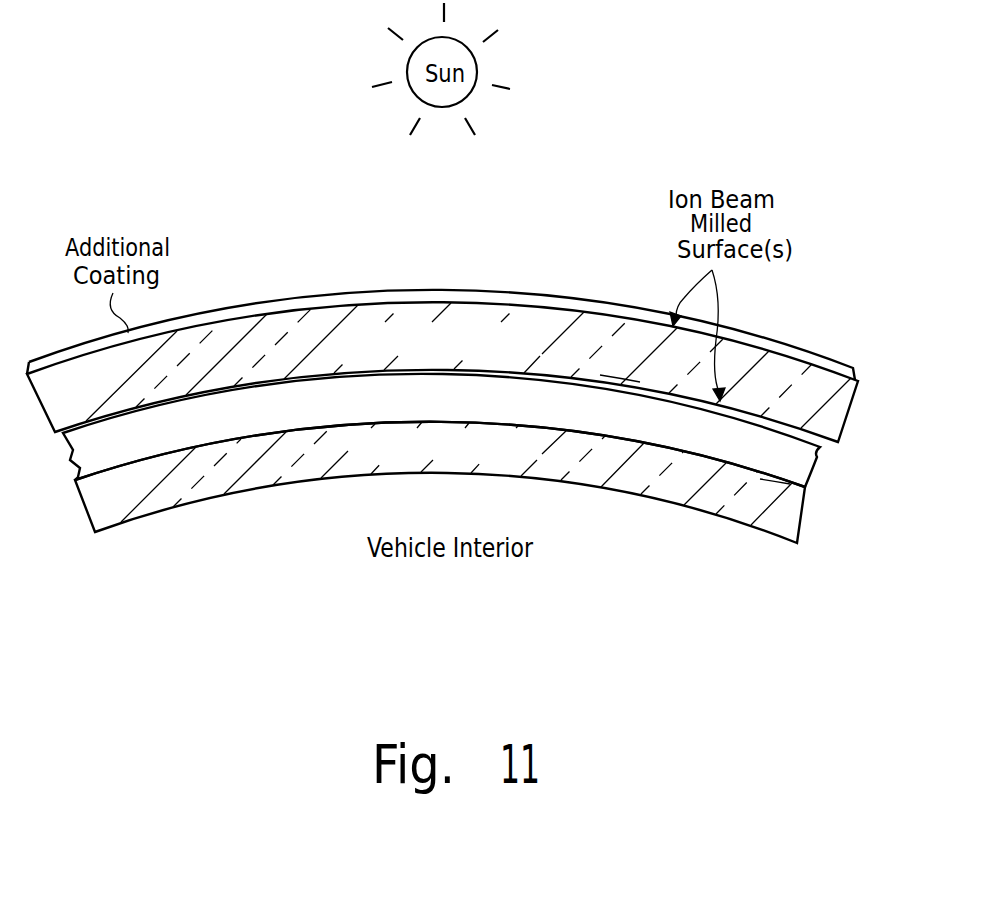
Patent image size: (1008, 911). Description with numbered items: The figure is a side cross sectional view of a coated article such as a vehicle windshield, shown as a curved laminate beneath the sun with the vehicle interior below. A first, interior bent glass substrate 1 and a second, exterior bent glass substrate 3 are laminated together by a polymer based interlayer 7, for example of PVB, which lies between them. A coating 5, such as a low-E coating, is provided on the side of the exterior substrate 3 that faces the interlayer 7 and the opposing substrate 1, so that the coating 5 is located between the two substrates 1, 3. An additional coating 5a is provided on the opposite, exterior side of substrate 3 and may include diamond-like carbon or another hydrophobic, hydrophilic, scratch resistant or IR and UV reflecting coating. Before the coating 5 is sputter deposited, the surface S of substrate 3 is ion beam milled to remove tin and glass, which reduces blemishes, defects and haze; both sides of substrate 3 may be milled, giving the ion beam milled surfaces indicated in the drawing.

The interior glass substrate 1 is at (698, 490).
The exterior glass substrate 3 is at (785, 362).
The coating 5 is at (815, 455).
The additional coating 5a is at (435, 300).
The polymer based interlayer 7 is at (783, 457).
The substrate surface S is at (617, 382).